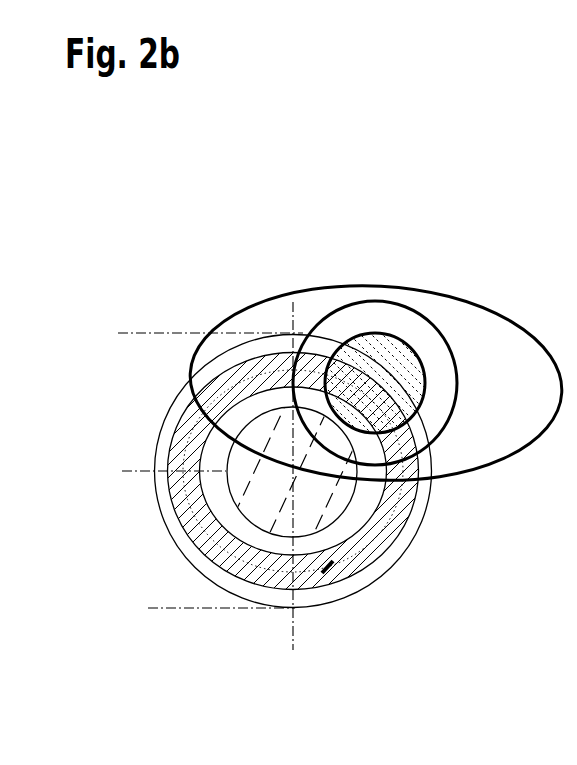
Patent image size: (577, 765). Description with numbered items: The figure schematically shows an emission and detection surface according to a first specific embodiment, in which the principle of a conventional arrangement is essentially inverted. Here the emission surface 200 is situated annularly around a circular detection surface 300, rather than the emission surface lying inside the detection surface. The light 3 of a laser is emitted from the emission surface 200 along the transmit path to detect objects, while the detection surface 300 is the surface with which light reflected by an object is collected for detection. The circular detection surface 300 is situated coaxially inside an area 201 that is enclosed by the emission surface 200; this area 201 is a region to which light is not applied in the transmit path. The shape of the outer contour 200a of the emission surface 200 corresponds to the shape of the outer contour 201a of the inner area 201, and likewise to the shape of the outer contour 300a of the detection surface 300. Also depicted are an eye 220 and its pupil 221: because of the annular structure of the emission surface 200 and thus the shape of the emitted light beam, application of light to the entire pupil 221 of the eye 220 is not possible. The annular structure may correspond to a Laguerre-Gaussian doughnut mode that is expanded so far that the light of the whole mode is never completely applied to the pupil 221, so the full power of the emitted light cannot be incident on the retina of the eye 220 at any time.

The light 3 is at (393, 507).
The emission surface 200 is at (332, 560).
The outer contour of emission surface 200a is at (338, 580).
The area 201 is at (205, 444).
The outer contour of inner area 201a is at (188, 492).
The eye 220 is at (528, 322).
The pupil 221 is at (385, 360).
The detection surface 300 is at (258, 500).
The sensor surface 300a is at (245, 543).